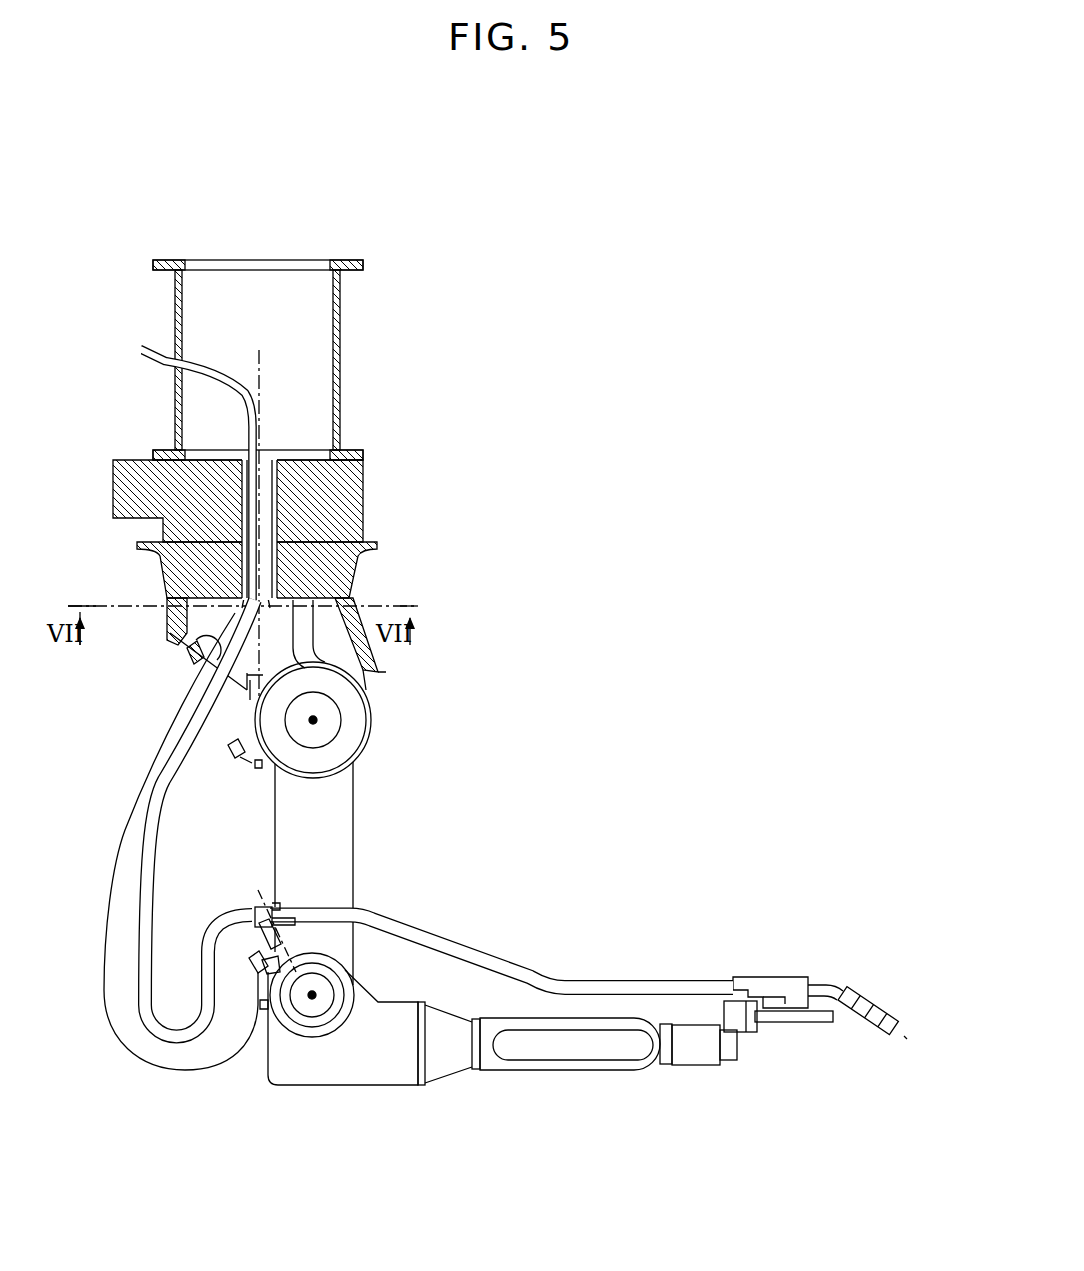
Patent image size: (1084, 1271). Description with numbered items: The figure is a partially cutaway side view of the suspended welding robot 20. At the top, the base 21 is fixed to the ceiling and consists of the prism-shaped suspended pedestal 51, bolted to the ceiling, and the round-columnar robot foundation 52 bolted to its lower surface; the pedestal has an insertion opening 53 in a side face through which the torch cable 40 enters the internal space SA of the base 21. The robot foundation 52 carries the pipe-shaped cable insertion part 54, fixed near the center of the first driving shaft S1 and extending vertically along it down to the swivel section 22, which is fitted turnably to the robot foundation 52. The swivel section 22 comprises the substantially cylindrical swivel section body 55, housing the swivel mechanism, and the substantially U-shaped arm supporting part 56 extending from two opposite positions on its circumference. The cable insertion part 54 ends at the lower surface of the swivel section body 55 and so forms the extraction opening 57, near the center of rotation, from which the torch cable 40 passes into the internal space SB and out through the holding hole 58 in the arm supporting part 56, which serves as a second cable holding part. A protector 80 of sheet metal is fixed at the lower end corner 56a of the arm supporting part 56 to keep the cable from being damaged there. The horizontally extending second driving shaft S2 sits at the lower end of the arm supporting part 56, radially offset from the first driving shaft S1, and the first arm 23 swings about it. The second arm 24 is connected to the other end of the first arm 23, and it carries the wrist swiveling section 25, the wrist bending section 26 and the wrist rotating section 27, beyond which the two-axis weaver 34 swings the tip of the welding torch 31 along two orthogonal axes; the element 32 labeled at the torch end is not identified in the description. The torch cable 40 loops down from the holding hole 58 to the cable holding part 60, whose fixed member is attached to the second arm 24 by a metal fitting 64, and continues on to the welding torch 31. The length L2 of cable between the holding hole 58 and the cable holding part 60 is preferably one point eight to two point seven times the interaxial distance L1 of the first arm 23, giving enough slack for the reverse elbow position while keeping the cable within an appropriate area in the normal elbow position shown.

The suspended welding robot 20 is at (447, 178).
The internal space SA is at (313, 290).
The suspended pedestal 51 is at (342, 343).
The robot foundation 52 is at (340, 478).
The base 21 is at (465, 350).
The cable insertion part 54 is at (285, 518).
The swivel section body 55 is at (340, 562).
The swivel section 22 is at (503, 552).
The arm supporting part 56 is at (349, 648).
The second driving shaft S2 is at (318, 719).
The extraction opening 57 is at (247, 598).
The internal space SB is at (235, 615).
The holding hole 58 is at (188, 665).
The lower end corner 56a is at (247, 745).
The protector 80 is at (238, 770).
The first arm 23 is at (337, 840).
The interaxial distance L1 is at (313, 720).
The second arm 24 is at (368, 1072).
The wrist swiveling section 25 is at (542, 1048).
The wrist bending section 26 is at (697, 1055).
The wrist rotating section 27 is at (736, 1017).
The two-axis weaver 34 is at (792, 985).
The welding torch 31 is at (872, 1012).
The hose end 32 is at (905, 1038).
The insertion opening 53 is at (177, 340).
The first driving shaft S1 is at (250, 414).
The torch cable 40 is at (152, 1020).
The length L2 is at (176, 841).
The cable holding part 60 is at (280, 949).
The metal fitting 64 is at (266, 985).